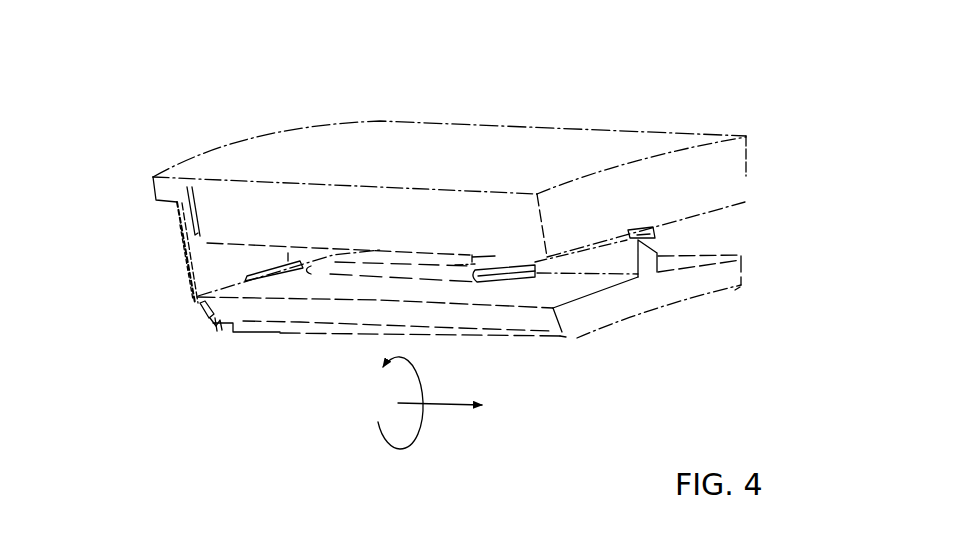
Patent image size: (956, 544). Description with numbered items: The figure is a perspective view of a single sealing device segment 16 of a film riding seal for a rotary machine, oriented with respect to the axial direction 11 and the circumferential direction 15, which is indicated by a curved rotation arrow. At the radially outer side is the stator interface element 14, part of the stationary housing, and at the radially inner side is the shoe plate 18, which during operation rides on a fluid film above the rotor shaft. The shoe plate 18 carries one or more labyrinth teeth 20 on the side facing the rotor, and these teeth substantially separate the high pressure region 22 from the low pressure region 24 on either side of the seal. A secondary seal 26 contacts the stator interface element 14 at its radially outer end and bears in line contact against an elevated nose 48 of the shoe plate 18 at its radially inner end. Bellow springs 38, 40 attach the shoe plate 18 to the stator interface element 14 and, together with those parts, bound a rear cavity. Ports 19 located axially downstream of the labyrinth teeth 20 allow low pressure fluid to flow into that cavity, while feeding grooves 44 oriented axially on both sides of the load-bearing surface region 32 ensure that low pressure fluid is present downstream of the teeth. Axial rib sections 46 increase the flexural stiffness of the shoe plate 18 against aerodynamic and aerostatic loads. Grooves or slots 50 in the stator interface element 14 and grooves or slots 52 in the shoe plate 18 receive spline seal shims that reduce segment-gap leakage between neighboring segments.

The axial direction 11 is at (457, 408).
The stator interface element 14 is at (731, 170).
The circumferential direction 15 is at (403, 450).
The sealing device segment 16 is at (715, 75).
The shoe plate 18 is at (740, 273).
The port 19 is at (262, 272).
The labyrinth tooth 20 is at (217, 330).
The high pressure region 22 is at (140, 232).
The low pressure region 24 is at (752, 225).
The secondary seal 26 is at (190, 273).
The load-bearing surface region 32 is at (517, 339).
The bellow spring 38 is at (498, 269).
The bellow spring 40 is at (638, 229).
The feeding groove 44 is at (561, 337).
The axial rib section 46 is at (651, 257).
The elevated nose 48 is at (197, 307).
The groove or slot 50 is at (193, 215).
The groove or slot 52 is at (212, 312).